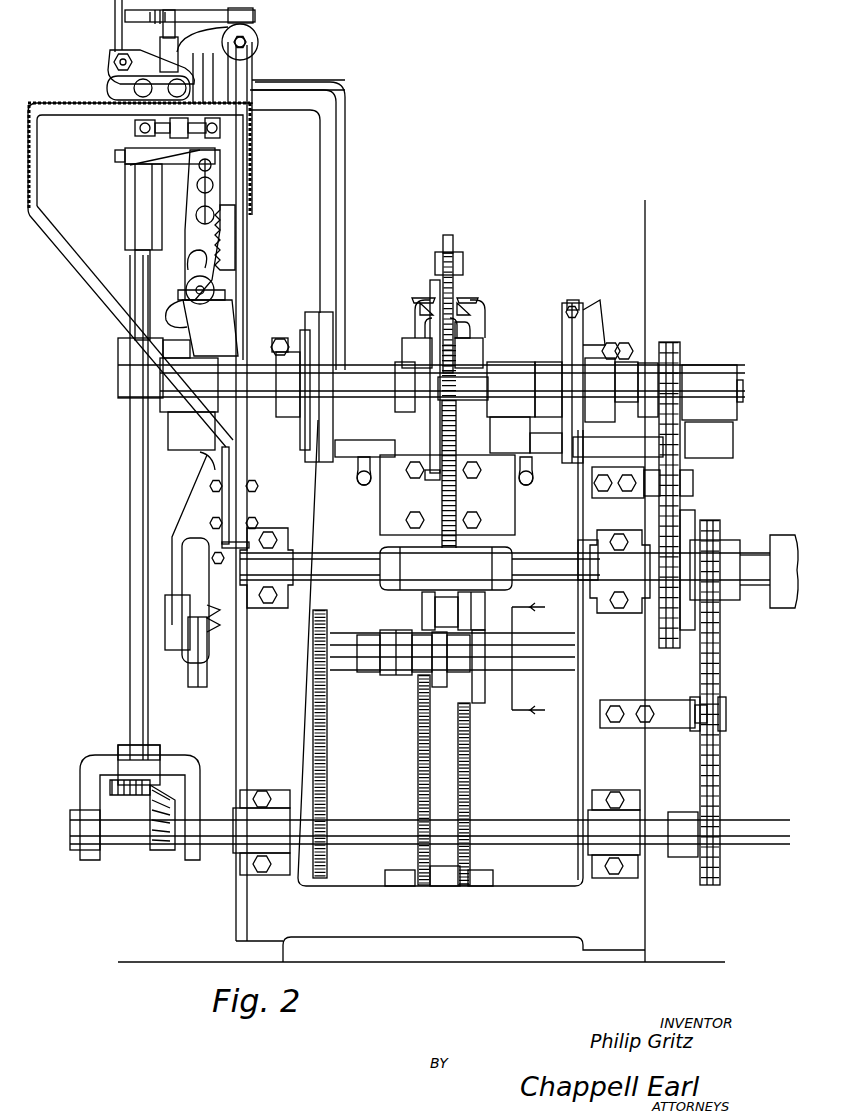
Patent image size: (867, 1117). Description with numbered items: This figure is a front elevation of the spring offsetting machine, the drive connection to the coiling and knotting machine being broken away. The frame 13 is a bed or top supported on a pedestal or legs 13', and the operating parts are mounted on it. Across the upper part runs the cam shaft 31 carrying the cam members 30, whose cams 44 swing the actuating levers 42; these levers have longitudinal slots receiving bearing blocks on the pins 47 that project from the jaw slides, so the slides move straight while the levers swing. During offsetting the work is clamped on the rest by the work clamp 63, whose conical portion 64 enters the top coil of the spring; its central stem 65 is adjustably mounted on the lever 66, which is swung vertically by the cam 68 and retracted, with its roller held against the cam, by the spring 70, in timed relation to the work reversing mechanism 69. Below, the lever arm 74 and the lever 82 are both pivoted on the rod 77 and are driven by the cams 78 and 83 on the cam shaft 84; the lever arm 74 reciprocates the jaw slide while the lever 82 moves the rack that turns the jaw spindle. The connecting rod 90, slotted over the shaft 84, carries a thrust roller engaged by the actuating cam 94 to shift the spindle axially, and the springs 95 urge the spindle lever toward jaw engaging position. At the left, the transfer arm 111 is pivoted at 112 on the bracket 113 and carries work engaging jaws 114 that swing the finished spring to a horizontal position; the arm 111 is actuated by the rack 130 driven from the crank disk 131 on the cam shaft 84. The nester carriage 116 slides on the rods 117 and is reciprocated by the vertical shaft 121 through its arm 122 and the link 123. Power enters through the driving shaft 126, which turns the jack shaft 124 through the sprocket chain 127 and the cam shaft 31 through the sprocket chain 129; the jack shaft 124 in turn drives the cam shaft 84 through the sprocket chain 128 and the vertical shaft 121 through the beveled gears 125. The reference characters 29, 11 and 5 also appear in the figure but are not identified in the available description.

The carriage 116 is at (165, 62).
The rods 117 is at (130, 96).
The work engaging jaws 114 is at (205, 81).
The link or connecting rod 123 is at (140, 127).
The arm 122 is at (160, 165).
The transfer arm 111 is at (215, 187).
The rack 130 is at (225, 242).
The pivot 112 is at (215, 282).
The bracket 113 is at (210, 315).
The vertical shaft 121 is at (130, 487).
The actuating levers 42 is at (272, 352).
The pins 47 is at (283, 340).
The cams 44 is at (300, 410).
The cam members 30 is at (310, 462).
The cam shaft 31 is at (485, 375).
The pin 29 is at (573, 300).
The central stem 65 is at (448, 243).
The lever 66 is at (460, 262).
The work clamp 63 is at (435, 300).
The conical portion 64 is at (422, 304).
The bracket 11 is at (470, 303).
The work reversing mechanism 69 is at (486, 322).
The cam 68 is at (432, 480).
The spring 70 is at (452, 492).
The springs 95 is at (362, 472).
The frame 13 is at (619, 485).
The pedestal or legs 13' is at (394, 644).
The rod 77 is at (345, 570).
The lever arm 74 is at (410, 565).
The lever 82 is at (473, 582).
The section line 5 is at (536, 660).
The cam shaft 84 is at (538, 662).
The actuating cam 94 is at (383, 683).
The connecting rod 90 is at (408, 680).
The cam 78 is at (440, 690).
The cam 83 is at (482, 703).
The sprocket chain 128 is at (335, 748).
The jack shaft 124 is at (372, 830).
The beveled gears 125 is at (160, 830).
The sprocket chain 129 is at (675, 520).
The sprocket chain 127 is at (712, 680).
The driving shaft 126 is at (752, 585).
The crank disk 131 is at (190, 668).